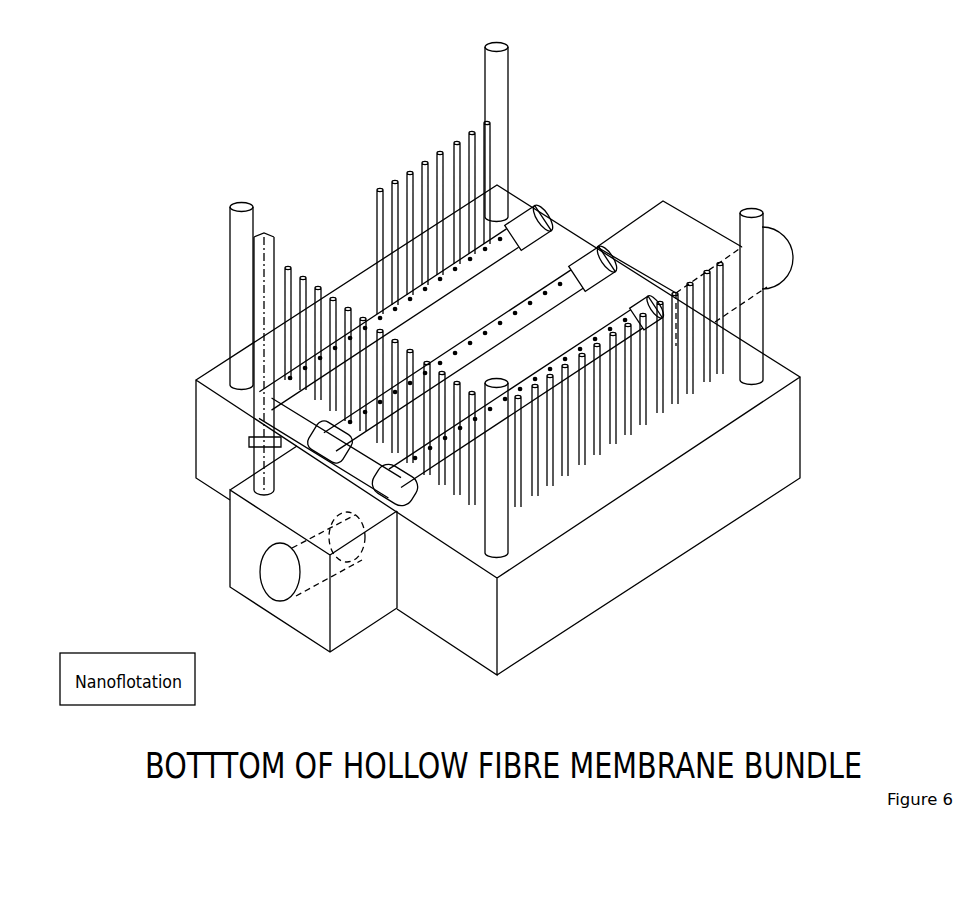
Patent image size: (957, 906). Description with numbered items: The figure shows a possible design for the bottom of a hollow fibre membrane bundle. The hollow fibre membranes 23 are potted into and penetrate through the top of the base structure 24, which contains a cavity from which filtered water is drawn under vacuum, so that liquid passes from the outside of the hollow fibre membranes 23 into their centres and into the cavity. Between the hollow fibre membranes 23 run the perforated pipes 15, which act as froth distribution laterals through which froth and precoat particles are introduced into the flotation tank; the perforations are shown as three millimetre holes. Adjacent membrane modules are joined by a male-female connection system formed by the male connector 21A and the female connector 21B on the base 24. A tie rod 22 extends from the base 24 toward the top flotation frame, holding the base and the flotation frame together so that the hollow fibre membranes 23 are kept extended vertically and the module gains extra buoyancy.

The perforated pipes 15 is at (370, 317).
The male connector 21A is at (862, 158).
The female connector 21B is at (245, 690).
The tie rod between top of flotation frame and base of membrane bundle 22 is at (508, 102).
The hollow fibre membranes 23 is at (470, 130).
The base structure 24 is at (498, 430).